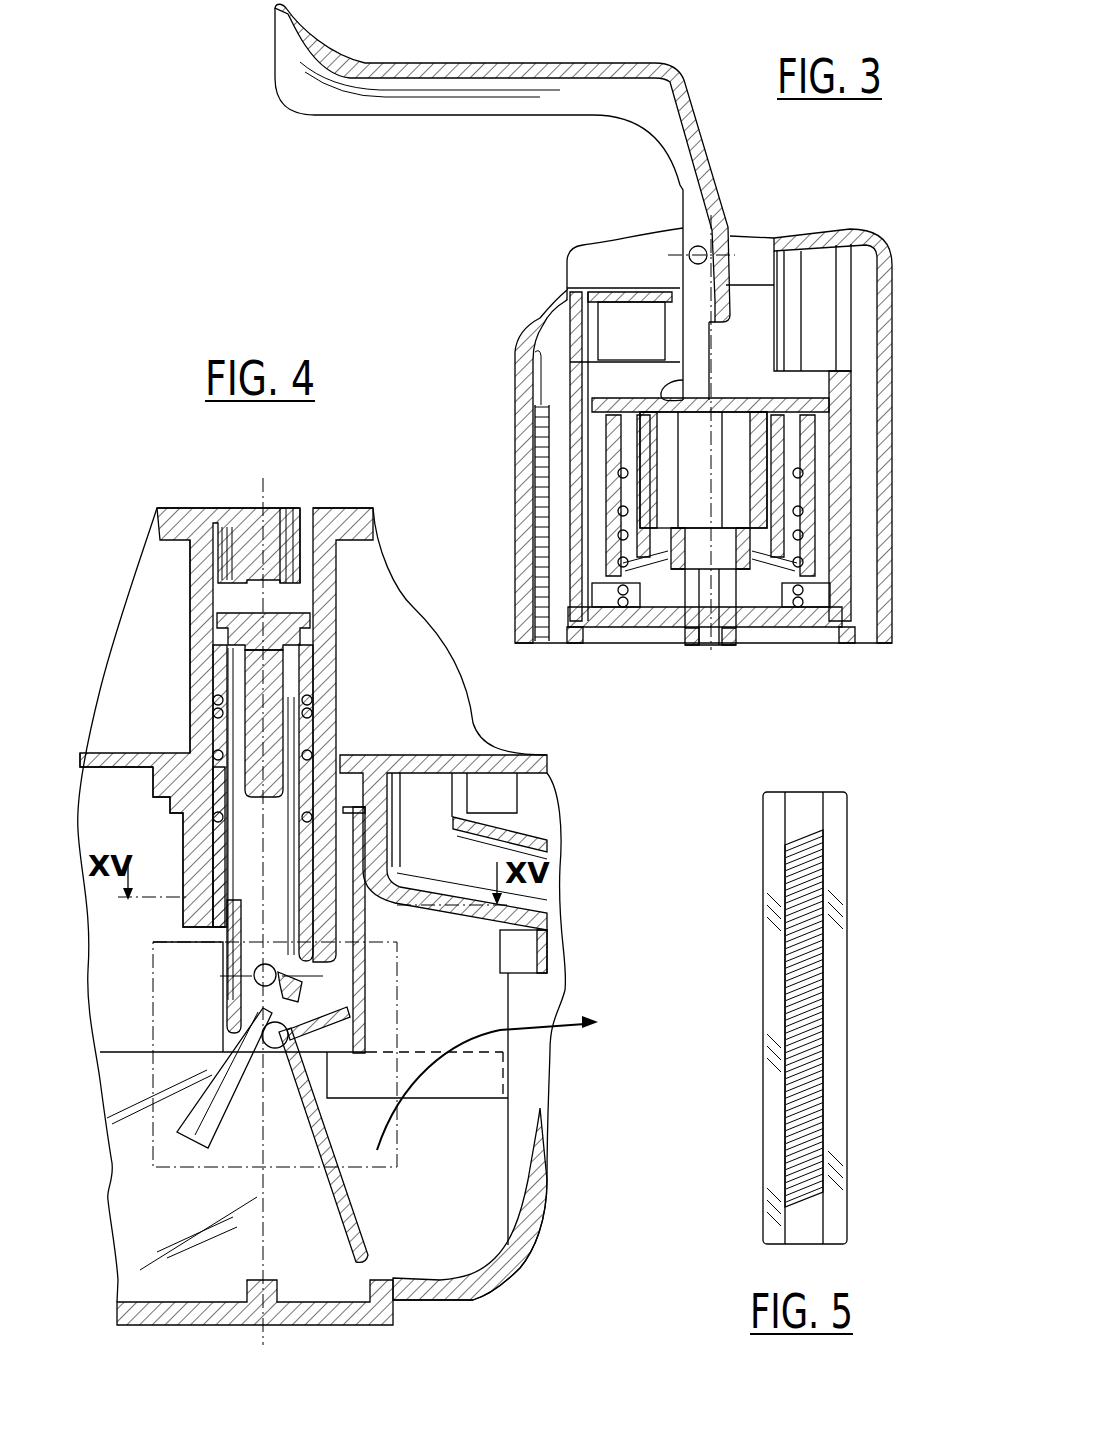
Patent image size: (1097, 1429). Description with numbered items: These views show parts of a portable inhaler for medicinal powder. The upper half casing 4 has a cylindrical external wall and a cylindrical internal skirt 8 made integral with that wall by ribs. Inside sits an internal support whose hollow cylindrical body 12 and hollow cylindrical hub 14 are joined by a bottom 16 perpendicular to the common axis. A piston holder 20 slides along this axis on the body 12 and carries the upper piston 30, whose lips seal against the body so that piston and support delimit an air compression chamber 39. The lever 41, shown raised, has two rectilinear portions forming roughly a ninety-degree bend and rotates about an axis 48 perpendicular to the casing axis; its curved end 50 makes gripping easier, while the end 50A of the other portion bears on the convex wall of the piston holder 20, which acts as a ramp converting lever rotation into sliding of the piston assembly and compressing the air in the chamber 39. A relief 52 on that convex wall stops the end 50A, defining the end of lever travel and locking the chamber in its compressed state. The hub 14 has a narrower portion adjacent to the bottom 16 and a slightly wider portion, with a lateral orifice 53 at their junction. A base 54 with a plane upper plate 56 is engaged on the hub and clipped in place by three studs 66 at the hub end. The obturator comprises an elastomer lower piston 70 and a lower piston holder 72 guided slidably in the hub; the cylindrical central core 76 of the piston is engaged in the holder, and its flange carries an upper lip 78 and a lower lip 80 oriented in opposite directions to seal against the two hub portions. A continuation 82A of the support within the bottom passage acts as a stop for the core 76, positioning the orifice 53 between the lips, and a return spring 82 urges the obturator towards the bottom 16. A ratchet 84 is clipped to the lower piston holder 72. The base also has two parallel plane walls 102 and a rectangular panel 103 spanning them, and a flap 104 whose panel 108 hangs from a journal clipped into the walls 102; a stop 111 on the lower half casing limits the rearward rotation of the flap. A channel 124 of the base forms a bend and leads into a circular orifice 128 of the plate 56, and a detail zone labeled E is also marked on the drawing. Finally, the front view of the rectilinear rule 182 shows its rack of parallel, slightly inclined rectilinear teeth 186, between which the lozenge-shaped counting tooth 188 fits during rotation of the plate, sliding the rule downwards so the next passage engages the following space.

In FIG. 3, the upper half casing 4 is at (888, 286).
In FIG. 3, the cylindrical internal skirt 8 is at (840, 282).
In FIG. 3, the cylindrical body 12 is at (836, 449).
In FIG. 3, the piston holder 20 is at (600, 473).
In FIG. 3, the upper piston 30 is at (808, 506).
In FIG. 3, the air compression chamber 39 is at (597, 593).
In FIG. 3, the lever 41 is at (478, 93).
In FIG. 3, the axis 48 is at (690, 250).
In FIG. 3, the curved end 50 is at (288, 57).
In FIG. 3, the end 50A is at (694, 397).
In FIG. 3, the relief 52 is at (668, 389).
In FIG. 4, the cylindrical hub 14 is at (333, 565).
In FIG. 4, the bottom 16 is at (187, 507).
In FIG. 4, the lateral orifice 53 is at (327, 610).
In FIG. 4, the upper plate 56 is at (85, 762).
In FIG. 4, the base 54 is at (121, 815).
In FIG. 4, the studs 66 is at (327, 950).
In FIG. 4, the lower piston 70 is at (266, 750).
In FIG. 4, the lower piston holder 72 is at (229, 723).
In FIG. 4, the cylindrical central core 76 is at (276, 713).
In FIG. 4, the upper lip 78 is at (213, 625).
In FIG. 4, the lower lip 80 is at (308, 672).
In FIG. 4, the return spring 82 is at (213, 760).
In FIG. 4, the continuation 82A is at (283, 545).
In FIG. 4, the ratchet 84 is at (207, 1078).
In FIG. 4, the plane walls 102 is at (110, 927).
In FIG. 4, the plane rectangular panel 103 is at (367, 990).
In FIG. 4, the flap 104 is at (358, 1214).
In FIG. 4, the panel 108 is at (305, 1132).
In FIG. 4, the stop 111 is at (247, 1283).
In FIG. 4, the channel 124 is at (478, 862).
In FIG. 4, the circular orifice 128 is at (422, 768).
In FIG. 4, the chamber E is at (153, 967).
In FIG. 5, the rectilinear rule 182 is at (829, 850).
In FIG. 5, the rectilinear teeth 186 is at (815, 1057).
In FIG. 5, the counting tooth 188 is at (783, 852).